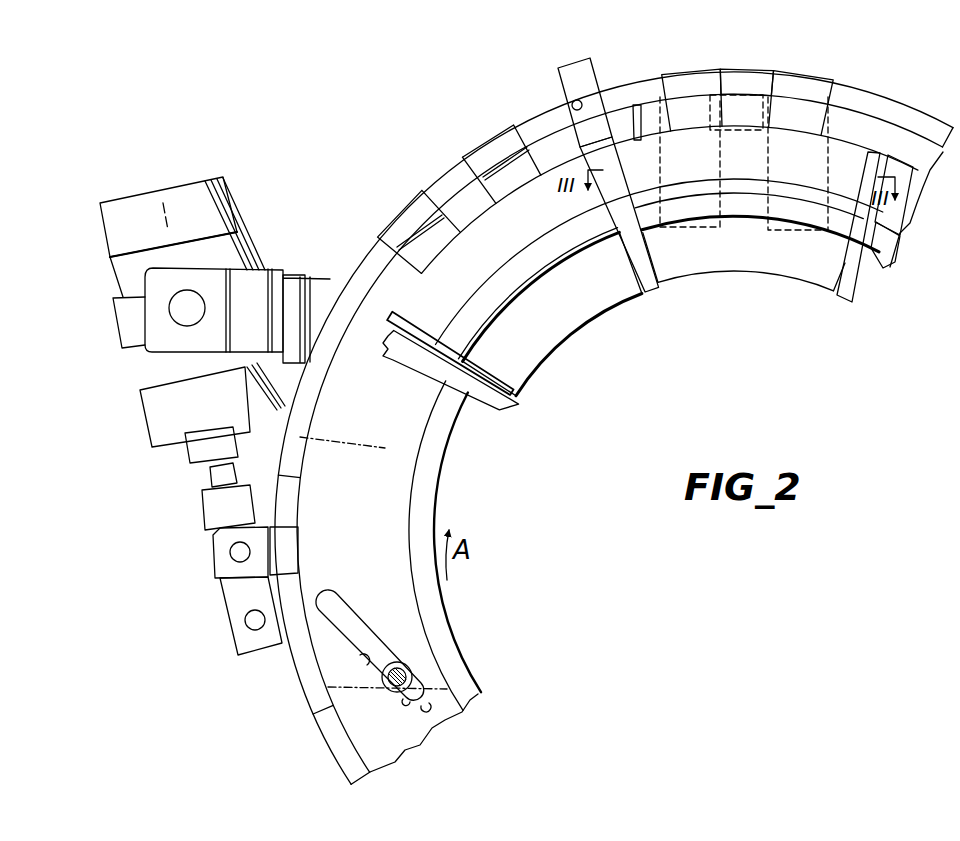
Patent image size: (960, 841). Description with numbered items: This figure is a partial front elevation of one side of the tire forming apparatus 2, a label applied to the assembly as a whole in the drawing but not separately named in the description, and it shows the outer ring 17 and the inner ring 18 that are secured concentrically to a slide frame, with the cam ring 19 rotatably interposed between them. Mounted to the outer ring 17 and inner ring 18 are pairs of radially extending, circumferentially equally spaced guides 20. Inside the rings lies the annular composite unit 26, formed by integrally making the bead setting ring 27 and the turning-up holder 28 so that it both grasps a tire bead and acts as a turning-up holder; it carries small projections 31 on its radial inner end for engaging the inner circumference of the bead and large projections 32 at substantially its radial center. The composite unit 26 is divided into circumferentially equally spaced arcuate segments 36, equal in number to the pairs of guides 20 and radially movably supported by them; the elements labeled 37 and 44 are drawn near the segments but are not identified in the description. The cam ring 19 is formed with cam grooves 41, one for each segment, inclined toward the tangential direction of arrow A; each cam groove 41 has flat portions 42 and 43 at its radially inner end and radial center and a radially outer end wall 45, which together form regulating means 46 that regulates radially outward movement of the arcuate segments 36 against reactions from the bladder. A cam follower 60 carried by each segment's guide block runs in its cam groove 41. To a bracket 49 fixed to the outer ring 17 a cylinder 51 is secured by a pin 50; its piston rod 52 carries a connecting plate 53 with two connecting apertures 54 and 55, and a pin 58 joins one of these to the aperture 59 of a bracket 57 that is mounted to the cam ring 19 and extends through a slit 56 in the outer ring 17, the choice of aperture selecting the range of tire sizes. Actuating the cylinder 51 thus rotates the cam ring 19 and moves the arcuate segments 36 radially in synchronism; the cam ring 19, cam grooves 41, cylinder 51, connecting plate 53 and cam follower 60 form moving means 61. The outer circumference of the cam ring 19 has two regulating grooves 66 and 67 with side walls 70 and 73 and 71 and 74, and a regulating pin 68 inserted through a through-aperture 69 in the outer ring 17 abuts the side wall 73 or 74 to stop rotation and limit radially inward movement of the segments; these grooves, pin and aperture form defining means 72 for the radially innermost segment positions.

The apparatus 2 is at (838, 68).
The outer ring 17 is at (370, 262).
The inner ring 18 is at (438, 488).
The cam ring 19 is at (422, 449).
The guides 20 is at (398, 208).
The annular composite unit 26 is at (629, 314).
The bead setting ring 27 is at (803, 272).
The turning-up holder 28 is at (820, 227).
The small projections 31 is at (600, 325).
The large projections 32 is at (586, 250).
The arcuate segments 36 is at (561, 358).
The radial bar 37 is at (392, 318).
The cam grooves 41 is at (373, 621).
The flat portion 42 is at (405, 700).
The flat portion 43 is at (360, 660).
The lever end 44 is at (424, 708).
The radially outer end wall 45 is at (330, 594).
The regulating means 46 is at (421, 609).
The bracket 49 is at (266, 270).
The pin 50 is at (169, 308).
The cylinder 51 is at (238, 230).
The piston rod 52 is at (208, 482).
The connecting plate 53 is at (233, 600).
The connecting aperture 54 is at (214, 545).
The connecting aperture 55 is at (245, 622).
The slit 56 is at (313, 710).
The bracket 57 is at (299, 538).
The pin 58 is at (231, 560).
The aperture 59 is at (251, 552).
The cam follower 60 is at (398, 661).
The moving means 61 is at (138, 418).
The regulating groove 66 is at (630, 115).
The regulating groove 67 is at (750, 94).
The regulating pin 68 is at (562, 66).
The through-aperture 69 is at (571, 104).
The side wall 70 is at (622, 132).
The side wall 71 is at (760, 96).
The defining means 72 is at (723, 62).
The side wall 73 is at (580, 145).
The side wall 74 is at (706, 104).